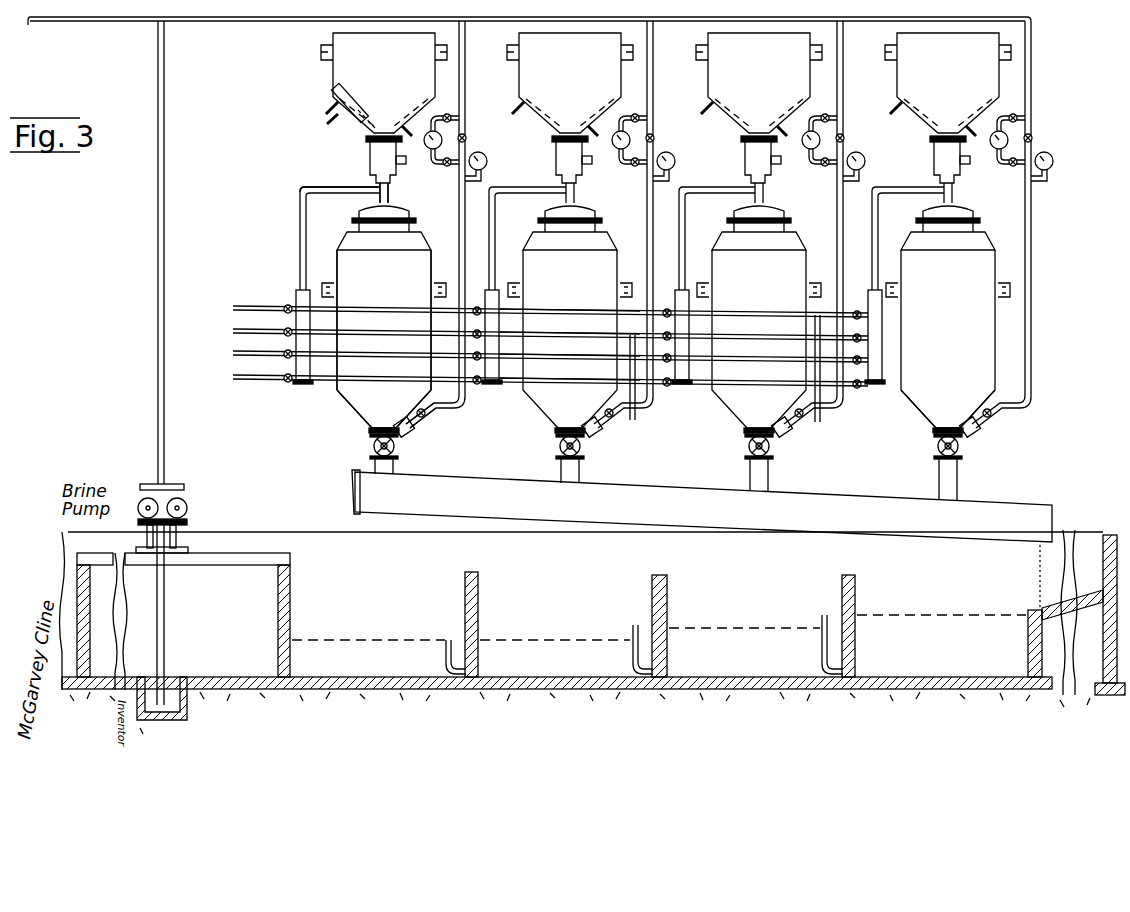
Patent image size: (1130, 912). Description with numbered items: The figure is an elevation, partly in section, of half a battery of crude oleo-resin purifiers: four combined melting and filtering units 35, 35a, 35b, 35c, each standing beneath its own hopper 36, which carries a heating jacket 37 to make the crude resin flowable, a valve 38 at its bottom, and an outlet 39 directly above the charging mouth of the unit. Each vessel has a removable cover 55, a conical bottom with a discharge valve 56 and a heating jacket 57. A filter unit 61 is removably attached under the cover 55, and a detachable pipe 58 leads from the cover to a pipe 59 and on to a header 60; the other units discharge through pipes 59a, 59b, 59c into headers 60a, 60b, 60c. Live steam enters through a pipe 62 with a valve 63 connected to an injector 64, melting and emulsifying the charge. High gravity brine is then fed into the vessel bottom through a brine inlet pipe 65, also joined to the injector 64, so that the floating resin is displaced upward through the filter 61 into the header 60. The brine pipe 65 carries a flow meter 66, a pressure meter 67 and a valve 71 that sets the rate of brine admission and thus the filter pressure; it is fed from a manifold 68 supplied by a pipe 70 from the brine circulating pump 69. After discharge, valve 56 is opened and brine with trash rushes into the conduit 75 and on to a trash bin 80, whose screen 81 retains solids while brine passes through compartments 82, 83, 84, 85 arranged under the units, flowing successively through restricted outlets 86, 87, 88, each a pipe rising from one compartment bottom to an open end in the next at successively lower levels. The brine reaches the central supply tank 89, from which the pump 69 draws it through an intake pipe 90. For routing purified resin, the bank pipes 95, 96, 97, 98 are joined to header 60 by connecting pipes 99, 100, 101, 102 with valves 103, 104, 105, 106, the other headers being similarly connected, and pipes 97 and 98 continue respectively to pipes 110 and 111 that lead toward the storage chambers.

The melting and filtering unit 35 is at (337, 258).
The melting and filtering unit 35a is at (530, 256).
The melting and filtering unit 35b is at (728, 252).
The melting and filtering unit 35c is at (1000, 258).
The hopper 36 is at (340, 68).
The heating jacket 37 is at (352, 120).
The valve 38 is at (373, 152).
The outlet 39 is at (391, 196).
The removable cover 55 is at (406, 210).
The discharge valve 56 is at (372, 449).
The heating jacket 57 is at (372, 408).
The detachable pipe 58 is at (347, 197).
The pipe 59 is at (300, 228).
The discharge pipe 59a is at (490, 204).
The discharge pipe 59b is at (678, 208).
The discharge pipe 59c is at (870, 210).
The header 60 is at (296, 293).
The header 60a is at (488, 294).
The header 60b is at (678, 294).
The header 60c is at (871, 294).
The filter unit 61 is at (398, 252).
The pipe 62 is at (428, 420).
The valve 63 is at (436, 432).
The injector 64 is at (686, 442).
The brine inlet pipe 65 is at (468, 402).
The flow meter 66 is at (445, 128).
The pressure meter 67 is at (490, 162).
The manifold 68 is at (260, 23).
The brine circulating pump 69 is at (185, 490).
The pipe 70 is at (165, 218).
The valve 71 is at (470, 138).
The conduit 75 is at (490, 490).
The trash bin 80 is at (1086, 542).
The screen 81 is at (1037, 572).
The compartment 82 is at (947, 690).
The compartment 83 is at (762, 690).
The compartment 84 is at (575, 690).
The compartment 85 is at (385, 690).
The restricted outlet 86 is at (830, 690).
The restricted outlet 87 is at (645, 690).
The restricted outlet 88 is at (460, 690).
The central supply tank 89 is at (236, 556).
The intake pipe 90 is at (166, 621).
The pipe 95 is at (558, 392).
The pipe 96 is at (578, 366).
The pipe 97 is at (548, 342).
The pipe 98 is at (574, 309).
The connecting pipe 99 is at (280, 384).
The connecting pipe 100 is at (284, 354).
The connecting pipe 101 is at (284, 331).
The connecting pipe 102 is at (284, 308).
The valve 103 is at (312, 378).
The valve 104 is at (312, 354).
The valve 105 is at (312, 331).
The valve 106 is at (312, 307).
The pipe 110 is at (636, 424).
The pipe 111 is at (822, 424).